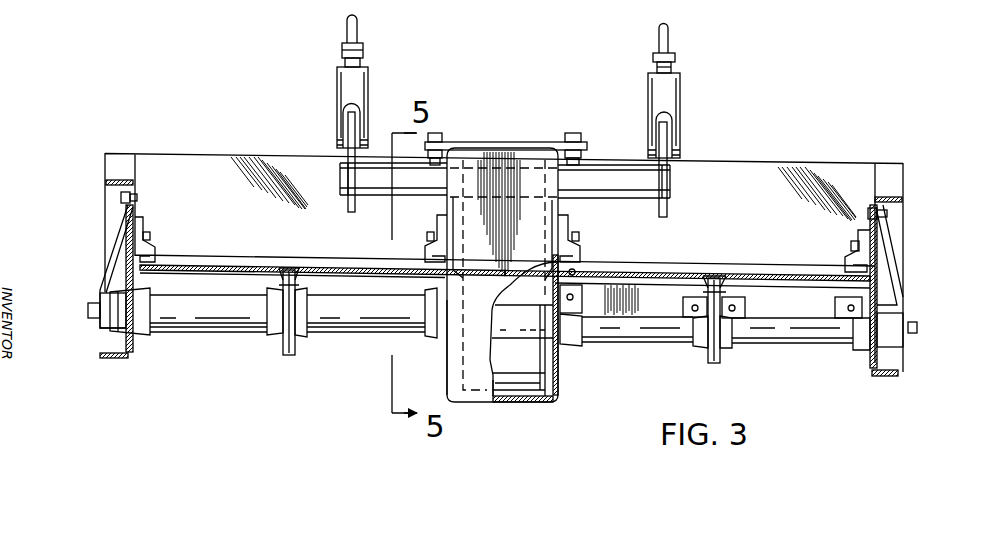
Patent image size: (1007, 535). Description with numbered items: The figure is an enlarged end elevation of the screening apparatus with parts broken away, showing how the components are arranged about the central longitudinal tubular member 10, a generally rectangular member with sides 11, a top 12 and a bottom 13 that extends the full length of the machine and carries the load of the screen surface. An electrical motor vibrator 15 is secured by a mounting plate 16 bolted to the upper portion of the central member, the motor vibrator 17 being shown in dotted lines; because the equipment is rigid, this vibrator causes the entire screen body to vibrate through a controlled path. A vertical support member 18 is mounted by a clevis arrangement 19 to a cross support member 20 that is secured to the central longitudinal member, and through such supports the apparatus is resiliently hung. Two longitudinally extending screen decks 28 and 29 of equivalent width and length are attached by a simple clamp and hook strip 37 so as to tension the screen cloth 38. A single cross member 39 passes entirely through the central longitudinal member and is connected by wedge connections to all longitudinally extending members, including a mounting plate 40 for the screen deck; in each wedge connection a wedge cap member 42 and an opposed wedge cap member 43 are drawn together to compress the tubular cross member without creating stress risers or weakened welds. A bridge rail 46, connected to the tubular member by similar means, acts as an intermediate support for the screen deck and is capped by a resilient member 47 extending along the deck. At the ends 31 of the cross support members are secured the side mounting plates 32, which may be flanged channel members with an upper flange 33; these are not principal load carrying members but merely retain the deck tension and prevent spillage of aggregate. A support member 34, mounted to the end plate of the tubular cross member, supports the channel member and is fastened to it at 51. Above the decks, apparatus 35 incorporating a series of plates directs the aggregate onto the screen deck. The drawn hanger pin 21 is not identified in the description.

The central longitudinal tubular member 10 is at (563, 373).
The sides 11 is at (446, 371).
The top 12 is at (536, 148).
The bottom 13 is at (512, 403).
The electrical motor vibrator 15 is at (522, 113).
The mounting plate 16 is at (472, 142).
The motor vibrator 17 is at (521, 366).
The vertical support member 18 is at (672, 33).
The clevis arrangement 19 is at (678, 95).
The cross support member 20 is at (598, 178).
The pin bar 21 is at (675, 138).
The screen deck 28 is at (283, 267).
The screen deck 29 is at (681, 269).
The ends of the cross support members 31 is at (101, 325).
The side mounting plate 32 is at (130, 242).
The upper flange 33 is at (112, 180).
The support member 34 is at (100, 276).
The aggregate directing apparatus 35 is at (175, 151).
The clamp and hook strip 37 is at (158, 243).
The screen cloth 38 is at (240, 265).
The cross member 39 is at (211, 337).
The mounting plate for the screen deck 40 is at (305, 347).
The wedge cap member 42 is at (308, 325).
The opposed wedge cap member 43 is at (273, 343).
The bridge rail 46 is at (291, 303).
The resilient member 47 is at (296, 273).
The fastening 51 is at (122, 197).